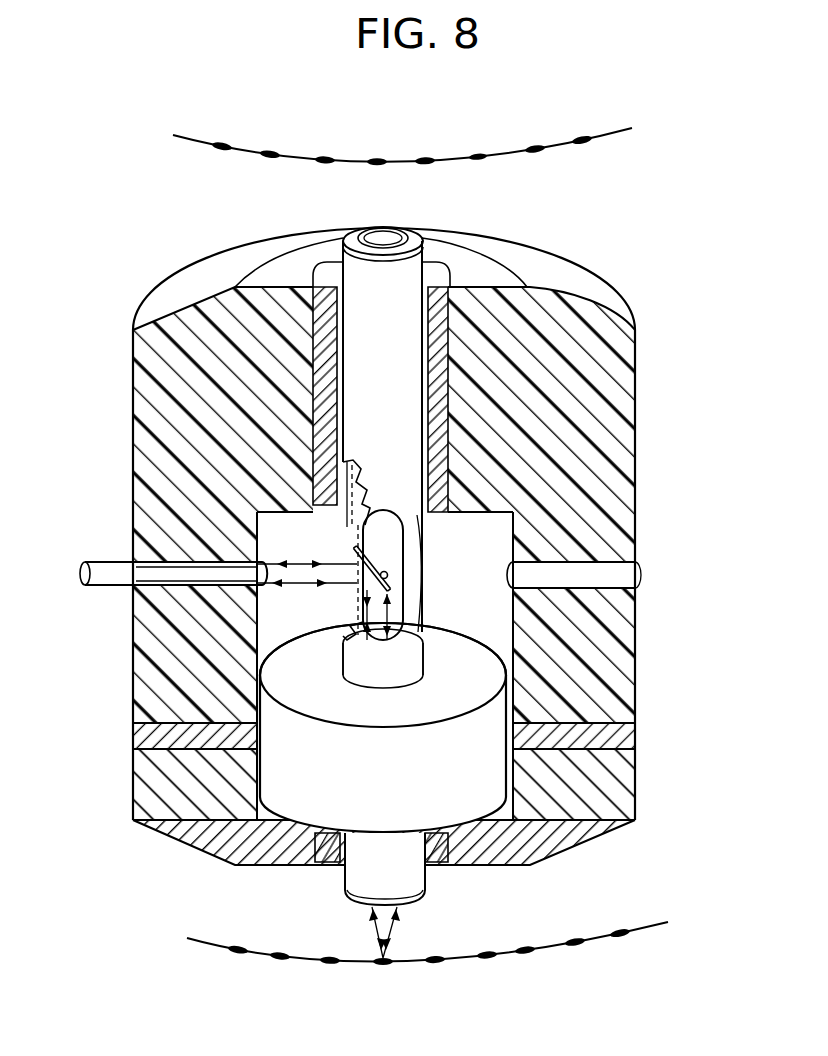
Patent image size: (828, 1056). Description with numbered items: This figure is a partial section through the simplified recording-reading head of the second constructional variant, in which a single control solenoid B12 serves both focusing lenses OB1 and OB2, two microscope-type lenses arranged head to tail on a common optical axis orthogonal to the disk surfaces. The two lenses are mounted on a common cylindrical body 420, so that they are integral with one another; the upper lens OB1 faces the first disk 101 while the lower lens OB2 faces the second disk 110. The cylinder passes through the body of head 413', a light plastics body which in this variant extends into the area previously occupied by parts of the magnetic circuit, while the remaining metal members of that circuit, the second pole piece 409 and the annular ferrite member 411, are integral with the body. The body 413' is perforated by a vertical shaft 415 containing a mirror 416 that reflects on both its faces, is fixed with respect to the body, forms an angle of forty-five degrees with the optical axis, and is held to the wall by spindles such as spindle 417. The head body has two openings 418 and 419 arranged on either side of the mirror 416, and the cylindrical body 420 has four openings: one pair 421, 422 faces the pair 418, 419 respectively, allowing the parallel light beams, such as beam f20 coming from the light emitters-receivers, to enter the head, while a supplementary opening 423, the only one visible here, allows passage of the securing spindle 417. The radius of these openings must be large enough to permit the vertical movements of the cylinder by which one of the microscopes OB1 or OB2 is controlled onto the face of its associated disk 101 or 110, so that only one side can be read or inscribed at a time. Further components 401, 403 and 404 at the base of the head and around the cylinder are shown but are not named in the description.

The disk 101 is at (563, 150).
The disk 110 is at (574, 938).
The common cylindrical body 420 is at (372, 297).
The focusing lens OB1 is at (400, 233).
The focusing lens OB2 is at (412, 908).
The body of head 413' is at (417, 524).
The guide sleeve bearing 404 is at (445, 510).
The mirror 416 is at (355, 550).
The spindle 417 is at (390, 576).
The opening 418 is at (133, 580).
The opening 419 is at (630, 580).
The opening 421 is at (355, 607).
The opening 422 is at (417, 590).
The supplementary opening 423 is at (425, 650).
The vertical shaft 415 is at (515, 616).
The second pole piece 409 is at (150, 737).
The annular ferrite member 411 is at (157, 781).
The moving coil B12 is at (500, 775).
The base plate 401 is at (168, 835).
The lower guide sleeve 403 is at (326, 862).
The input light beam f20 is at (133, 566).